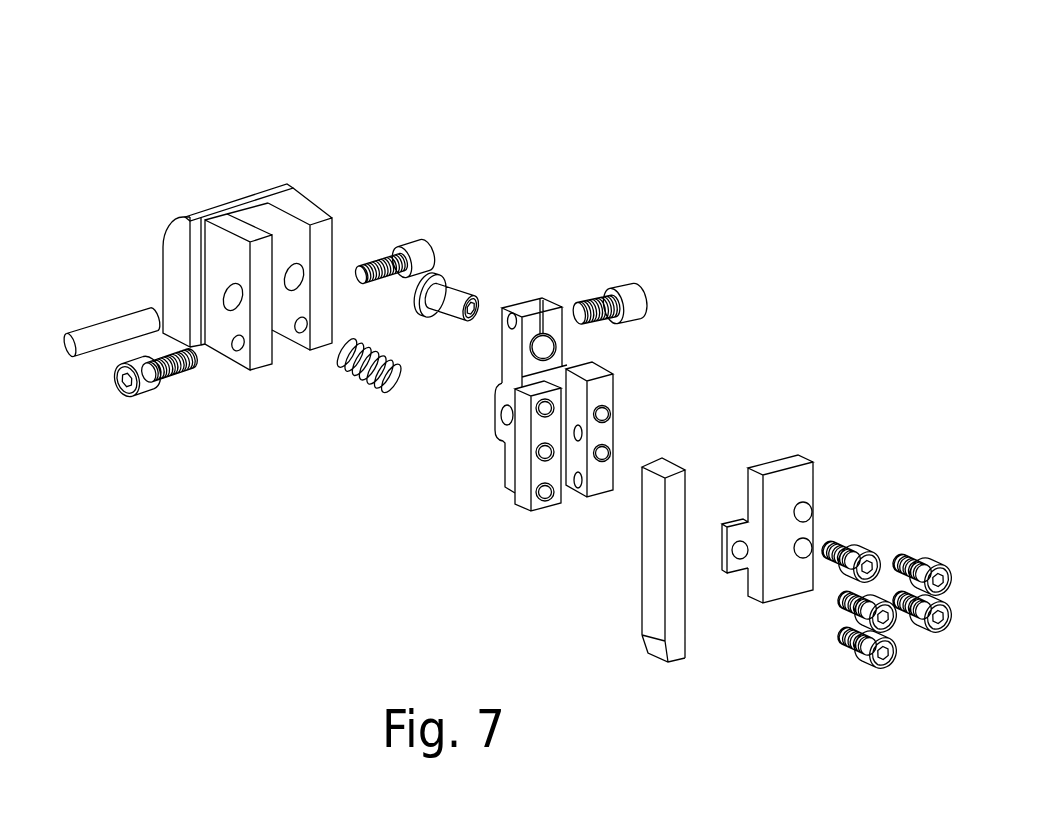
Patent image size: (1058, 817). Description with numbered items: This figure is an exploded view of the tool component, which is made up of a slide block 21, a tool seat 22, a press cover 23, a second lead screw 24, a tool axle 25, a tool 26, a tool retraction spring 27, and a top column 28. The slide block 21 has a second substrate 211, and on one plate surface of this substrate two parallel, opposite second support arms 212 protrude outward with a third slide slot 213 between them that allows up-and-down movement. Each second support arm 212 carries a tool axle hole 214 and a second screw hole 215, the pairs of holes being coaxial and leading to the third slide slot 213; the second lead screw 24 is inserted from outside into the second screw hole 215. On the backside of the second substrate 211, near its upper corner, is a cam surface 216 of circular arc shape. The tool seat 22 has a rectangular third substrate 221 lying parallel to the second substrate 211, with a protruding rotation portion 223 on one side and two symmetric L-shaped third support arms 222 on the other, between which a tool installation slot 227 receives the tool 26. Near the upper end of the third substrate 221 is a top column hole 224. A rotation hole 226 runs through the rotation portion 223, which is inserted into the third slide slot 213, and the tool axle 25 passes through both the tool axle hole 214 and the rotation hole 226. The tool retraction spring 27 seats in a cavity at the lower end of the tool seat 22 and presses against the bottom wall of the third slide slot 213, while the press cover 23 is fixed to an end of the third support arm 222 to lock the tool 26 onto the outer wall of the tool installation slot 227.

The slide block 21 is at (233, 200).
The second substrate 211 is at (165, 280).
The second support arms 212 is at (317, 212).
The third slide slot 213 is at (255, 213).
The tool axle hole 214 is at (294, 275).
The second screw hole 215 is at (238, 345).
The cam surface 216 is at (177, 215).
The tool seat 22 is at (617, 382).
The third substrate 221 is at (507, 485).
The third support arms 222 is at (603, 430).
The rotation portion 223 is at (495, 395).
The top column hole 224 is at (543, 347).
The rotation hole 226 is at (507, 422).
The tool installation slot 227 is at (565, 477).
The press cover 23 is at (803, 487).
The second lead screw 24 is at (163, 379).
The tool axle 25 is at (67, 333).
The tool 26 is at (642, 617).
The tool retraction spring 27 is at (343, 385).
The top column 28 is at (455, 273).